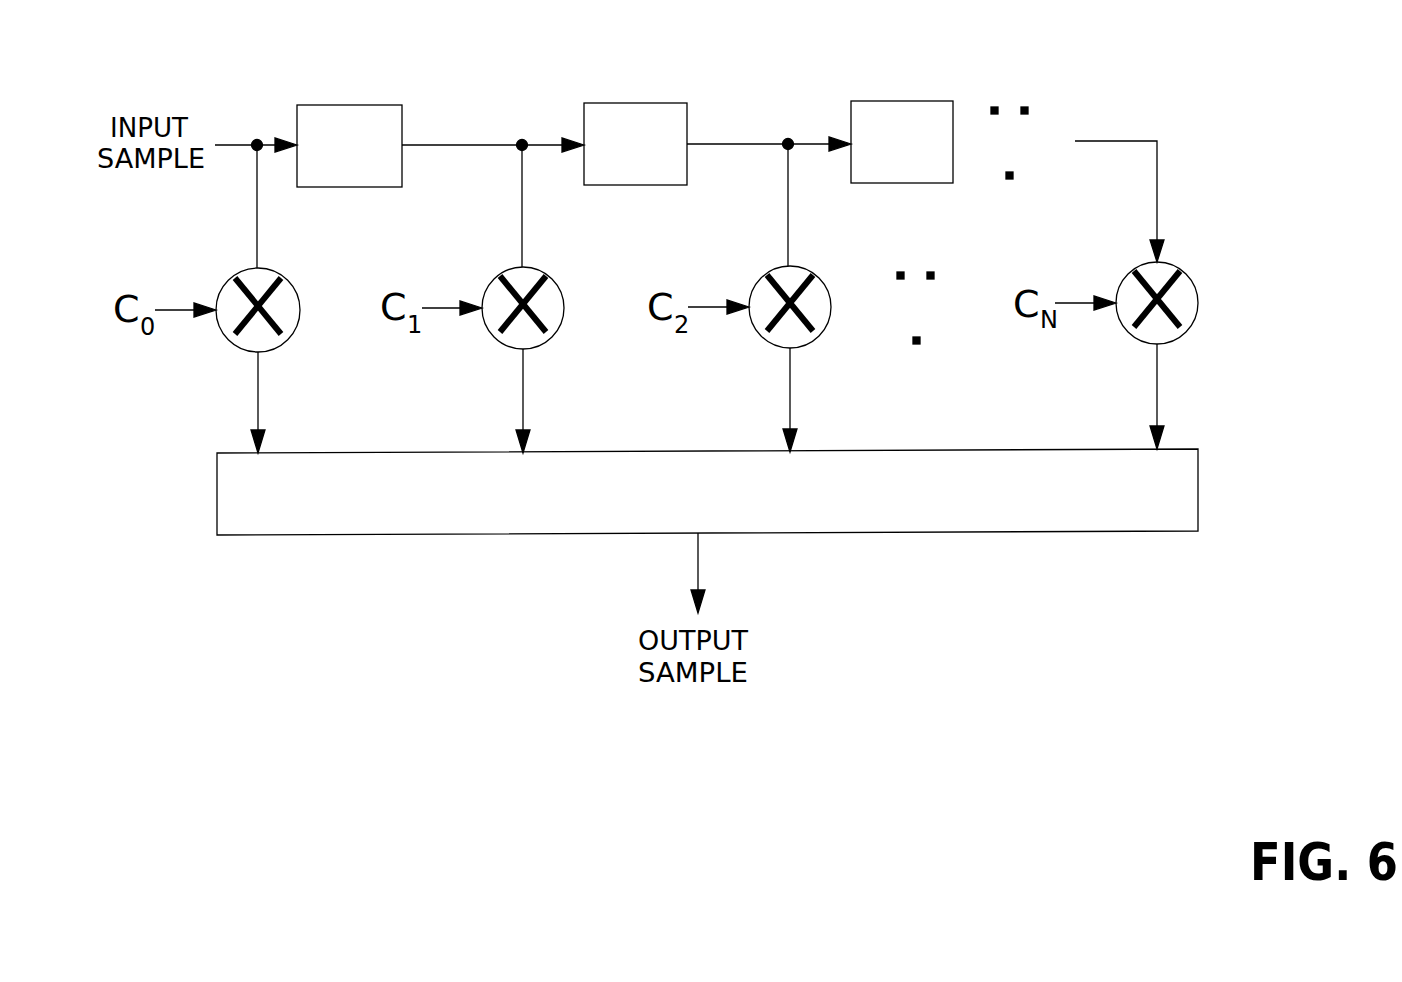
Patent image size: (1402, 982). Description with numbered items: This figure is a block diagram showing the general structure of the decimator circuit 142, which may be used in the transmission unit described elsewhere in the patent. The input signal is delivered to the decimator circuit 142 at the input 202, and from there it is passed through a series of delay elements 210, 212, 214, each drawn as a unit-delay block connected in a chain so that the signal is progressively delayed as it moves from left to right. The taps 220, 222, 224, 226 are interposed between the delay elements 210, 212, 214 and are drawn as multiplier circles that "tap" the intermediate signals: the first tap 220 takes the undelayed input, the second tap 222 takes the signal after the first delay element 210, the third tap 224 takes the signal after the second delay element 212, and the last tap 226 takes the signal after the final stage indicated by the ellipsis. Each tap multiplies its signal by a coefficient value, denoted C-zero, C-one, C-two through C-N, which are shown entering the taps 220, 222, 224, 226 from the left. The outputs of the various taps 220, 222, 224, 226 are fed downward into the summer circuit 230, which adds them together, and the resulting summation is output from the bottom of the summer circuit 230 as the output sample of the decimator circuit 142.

The decimator circuit 142 is at (1083, 737).
The input 202 is at (233, 145).
The delay element 210 is at (348, 105).
The delay element 212 is at (635, 103).
The delay element 214 is at (902, 101).
The tap 220 is at (285, 276).
The tap 222 is at (552, 274).
The tap 224 is at (817, 274).
The tap 226 is at (1180, 271).
The summer circuit 230 is at (352, 535).